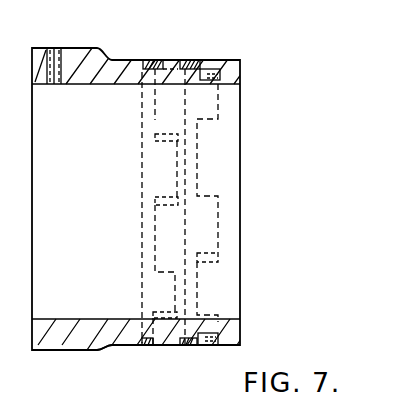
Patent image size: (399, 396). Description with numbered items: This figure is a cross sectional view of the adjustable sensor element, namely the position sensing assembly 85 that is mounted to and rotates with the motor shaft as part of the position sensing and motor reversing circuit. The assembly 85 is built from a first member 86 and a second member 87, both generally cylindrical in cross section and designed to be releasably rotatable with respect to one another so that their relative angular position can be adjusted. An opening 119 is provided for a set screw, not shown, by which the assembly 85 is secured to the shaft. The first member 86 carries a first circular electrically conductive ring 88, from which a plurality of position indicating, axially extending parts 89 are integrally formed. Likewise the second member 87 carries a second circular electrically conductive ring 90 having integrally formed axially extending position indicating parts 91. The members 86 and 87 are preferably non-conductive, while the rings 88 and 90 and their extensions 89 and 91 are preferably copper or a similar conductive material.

The opening 119 is at (53, 49).
The position sensing assembly 85 is at (99, 50).
The first circular electrically conductive ring 88 is at (150, 60).
The second circular electrically conductive ring 90 is at (196, 61).
The position indicating axially extending parts 89 is at (168, 176).
The position indicating axially extending parts 91 is at (205, 243).
The second member 87 is at (238, 345).
The first member 86 is at (107, 339).